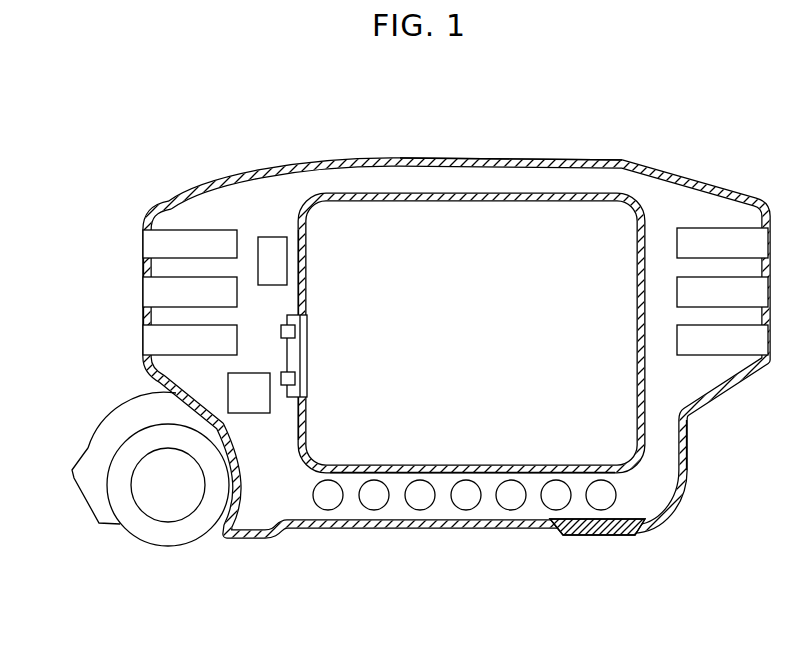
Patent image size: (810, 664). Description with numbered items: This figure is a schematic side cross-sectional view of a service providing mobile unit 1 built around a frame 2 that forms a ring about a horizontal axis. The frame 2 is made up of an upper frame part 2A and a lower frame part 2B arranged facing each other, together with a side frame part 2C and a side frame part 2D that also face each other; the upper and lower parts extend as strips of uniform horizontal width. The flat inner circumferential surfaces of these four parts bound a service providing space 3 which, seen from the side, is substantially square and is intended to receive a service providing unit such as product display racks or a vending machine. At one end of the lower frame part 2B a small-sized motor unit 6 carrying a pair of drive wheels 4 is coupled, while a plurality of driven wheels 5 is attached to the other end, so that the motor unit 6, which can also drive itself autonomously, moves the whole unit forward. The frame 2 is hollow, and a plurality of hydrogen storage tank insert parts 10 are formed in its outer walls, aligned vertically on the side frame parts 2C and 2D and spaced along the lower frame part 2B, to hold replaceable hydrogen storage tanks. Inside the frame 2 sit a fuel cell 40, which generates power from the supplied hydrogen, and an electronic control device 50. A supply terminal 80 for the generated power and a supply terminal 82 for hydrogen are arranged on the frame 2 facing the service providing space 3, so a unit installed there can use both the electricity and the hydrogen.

The service providing mobile unit 1 is at (615, 117).
The frame 2 is at (385, 152).
The upper frame part 2A is at (443, 197).
The lower frame part 2B is at (513, 466).
The side frame part 2C is at (143, 316).
The side frame part 2D is at (687, 437).
The service providing space 3 is at (528, 214).
The drive wheels 4 is at (146, 528).
The driven wheels 5 is at (595, 544).
The small-sized motor unit 6 is at (109, 424).
The hydrogen storage tank insert parts 10 is at (210, 332).
The fuel cell 40 is at (259, 402).
The electronic control device 50 is at (275, 249).
The supply terminal of generated power 80 is at (297, 333).
The supply terminal of hydrogen 82 is at (297, 380).